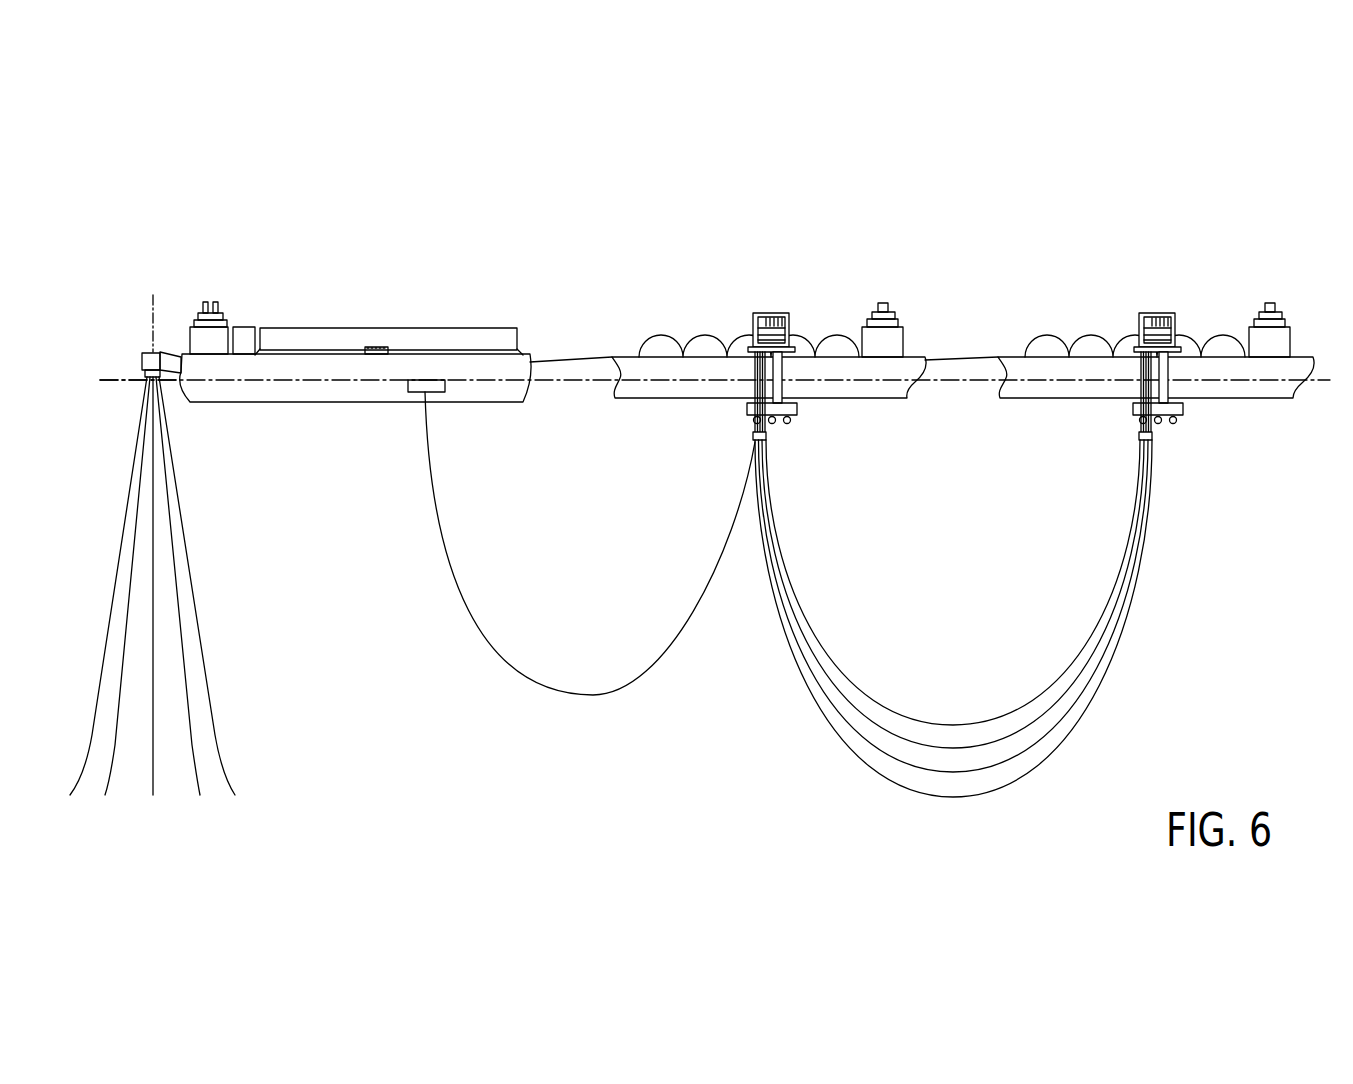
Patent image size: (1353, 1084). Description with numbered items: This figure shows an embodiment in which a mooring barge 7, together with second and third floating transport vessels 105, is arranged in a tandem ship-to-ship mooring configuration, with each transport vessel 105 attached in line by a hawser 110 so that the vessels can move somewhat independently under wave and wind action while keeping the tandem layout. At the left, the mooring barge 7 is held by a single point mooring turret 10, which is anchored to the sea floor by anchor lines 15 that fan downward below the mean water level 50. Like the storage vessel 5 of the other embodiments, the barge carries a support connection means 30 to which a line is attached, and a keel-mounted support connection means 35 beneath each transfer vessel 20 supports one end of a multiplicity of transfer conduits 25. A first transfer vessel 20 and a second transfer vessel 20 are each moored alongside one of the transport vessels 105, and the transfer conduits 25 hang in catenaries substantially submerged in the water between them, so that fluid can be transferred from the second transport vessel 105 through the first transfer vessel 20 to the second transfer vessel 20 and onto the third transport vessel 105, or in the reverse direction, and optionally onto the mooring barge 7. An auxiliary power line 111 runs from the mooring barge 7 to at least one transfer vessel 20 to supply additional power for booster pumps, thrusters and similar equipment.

The floating storage vessel 5 is at (430, 325).
The mooring barge 7 is at (300, 316).
The single point mooring turret 10 is at (142, 352).
The anchor lines 15 is at (192, 595).
The transfer vessel 20 is at (778, 311).
The transfer conduits 25 is at (820, 627).
The support connection means 30 is at (445, 394).
The support connection means 35 is at (768, 443).
The mean water level 50 is at (113, 380).
The floating transport vessel 105 is at (673, 316).
The hawser 110 is at (568, 357).
The auxiliary power line 111 is at (463, 569).